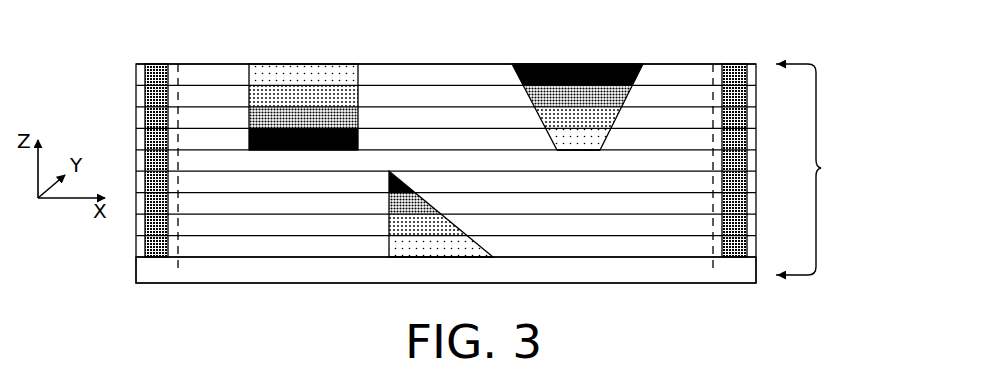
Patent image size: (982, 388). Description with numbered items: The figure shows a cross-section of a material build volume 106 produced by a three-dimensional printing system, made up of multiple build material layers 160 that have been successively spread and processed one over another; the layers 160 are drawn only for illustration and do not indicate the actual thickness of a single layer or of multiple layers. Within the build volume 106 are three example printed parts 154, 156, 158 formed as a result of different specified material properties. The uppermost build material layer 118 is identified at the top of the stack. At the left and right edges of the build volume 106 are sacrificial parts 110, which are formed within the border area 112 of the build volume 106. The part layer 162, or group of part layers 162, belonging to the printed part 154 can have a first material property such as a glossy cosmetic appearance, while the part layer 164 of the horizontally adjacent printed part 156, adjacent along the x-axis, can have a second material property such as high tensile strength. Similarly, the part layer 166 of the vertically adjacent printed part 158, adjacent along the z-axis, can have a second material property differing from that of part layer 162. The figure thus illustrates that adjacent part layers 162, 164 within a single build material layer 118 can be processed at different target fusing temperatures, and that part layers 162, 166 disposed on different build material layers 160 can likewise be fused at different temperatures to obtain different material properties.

The build volume 106 is at (196, 47).
The sacrificial parts 110 is at (146, 248).
The border area 112 is at (159, 296).
The build material layer 118 is at (668, 64).
The 3D printed part 154 is at (254, 156).
The 3D printed part 156 is at (599, 157).
The 3D printed part 158 is at (396, 265).
The build material layers 160 is at (821, 168).
The part layer 162 is at (358, 70).
The part layer 164 is at (515, 70).
The part layer 166 is at (389, 185).